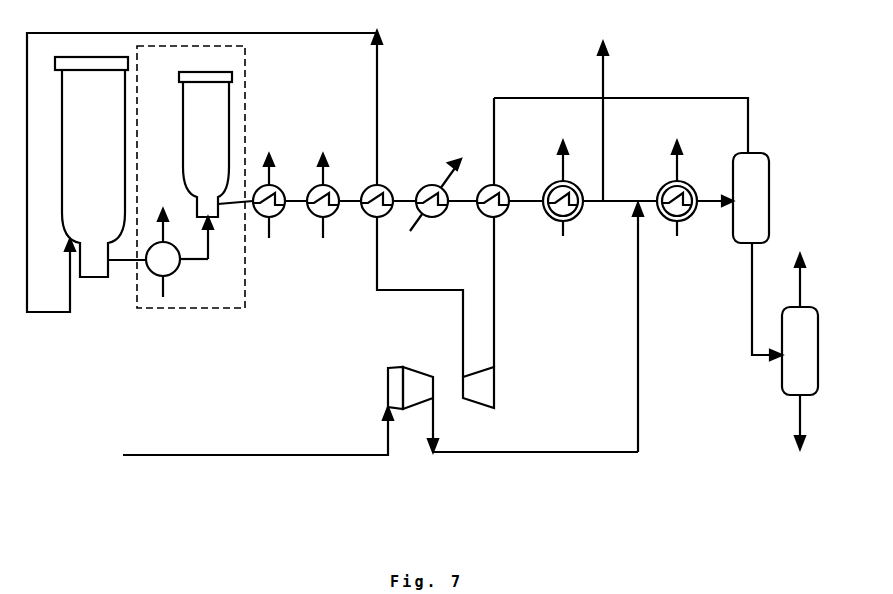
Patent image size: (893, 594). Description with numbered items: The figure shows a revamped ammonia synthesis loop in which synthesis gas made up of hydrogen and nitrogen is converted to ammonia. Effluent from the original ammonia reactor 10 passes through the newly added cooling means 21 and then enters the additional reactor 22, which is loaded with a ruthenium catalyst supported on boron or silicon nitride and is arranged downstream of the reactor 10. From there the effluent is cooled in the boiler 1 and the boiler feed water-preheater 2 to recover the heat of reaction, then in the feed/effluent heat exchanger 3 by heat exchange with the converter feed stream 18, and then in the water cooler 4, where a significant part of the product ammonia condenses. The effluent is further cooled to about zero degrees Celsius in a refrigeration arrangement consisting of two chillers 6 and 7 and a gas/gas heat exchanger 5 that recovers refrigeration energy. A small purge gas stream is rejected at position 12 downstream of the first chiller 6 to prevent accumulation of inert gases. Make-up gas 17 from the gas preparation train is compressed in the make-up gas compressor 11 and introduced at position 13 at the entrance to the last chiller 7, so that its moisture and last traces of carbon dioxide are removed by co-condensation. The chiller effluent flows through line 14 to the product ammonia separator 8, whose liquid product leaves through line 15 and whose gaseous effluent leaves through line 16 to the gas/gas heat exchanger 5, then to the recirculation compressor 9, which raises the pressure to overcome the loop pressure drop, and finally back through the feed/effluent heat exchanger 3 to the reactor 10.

The boiler 1 is at (268, 196).
The boiler feed water-preheater 2 is at (320, 196).
The feed/effluent heat exchanger 3 is at (588, 282).
The water cooler 4 is at (435, 195).
The gas/gas heat exchanger 5 is at (491, 193).
The chiller 6 is at (563, 188).
The chiller 7 is at (677, 188).
The product ammonia separator 8 is at (751, 198).
The recirculation compressor 9 is at (478, 253).
The ammonia reactor 10 is at (91, 167).
The make-up gas compressor 11 is at (513, 409).
The purge gas position 12 is at (603, 132).
The make-up gas introduction position 13 is at (636, 314).
The transfer line 14 is at (753, 301).
The bottom product line 15 is at (810, 422).
The overhead product line 16 is at (810, 280).
The make-up gas 17 is at (256, 431).
The converter feed stream 18 is at (215, 171).
The cooling means 21 is at (160, 253).
The additional reactor 22 is at (191, 177).